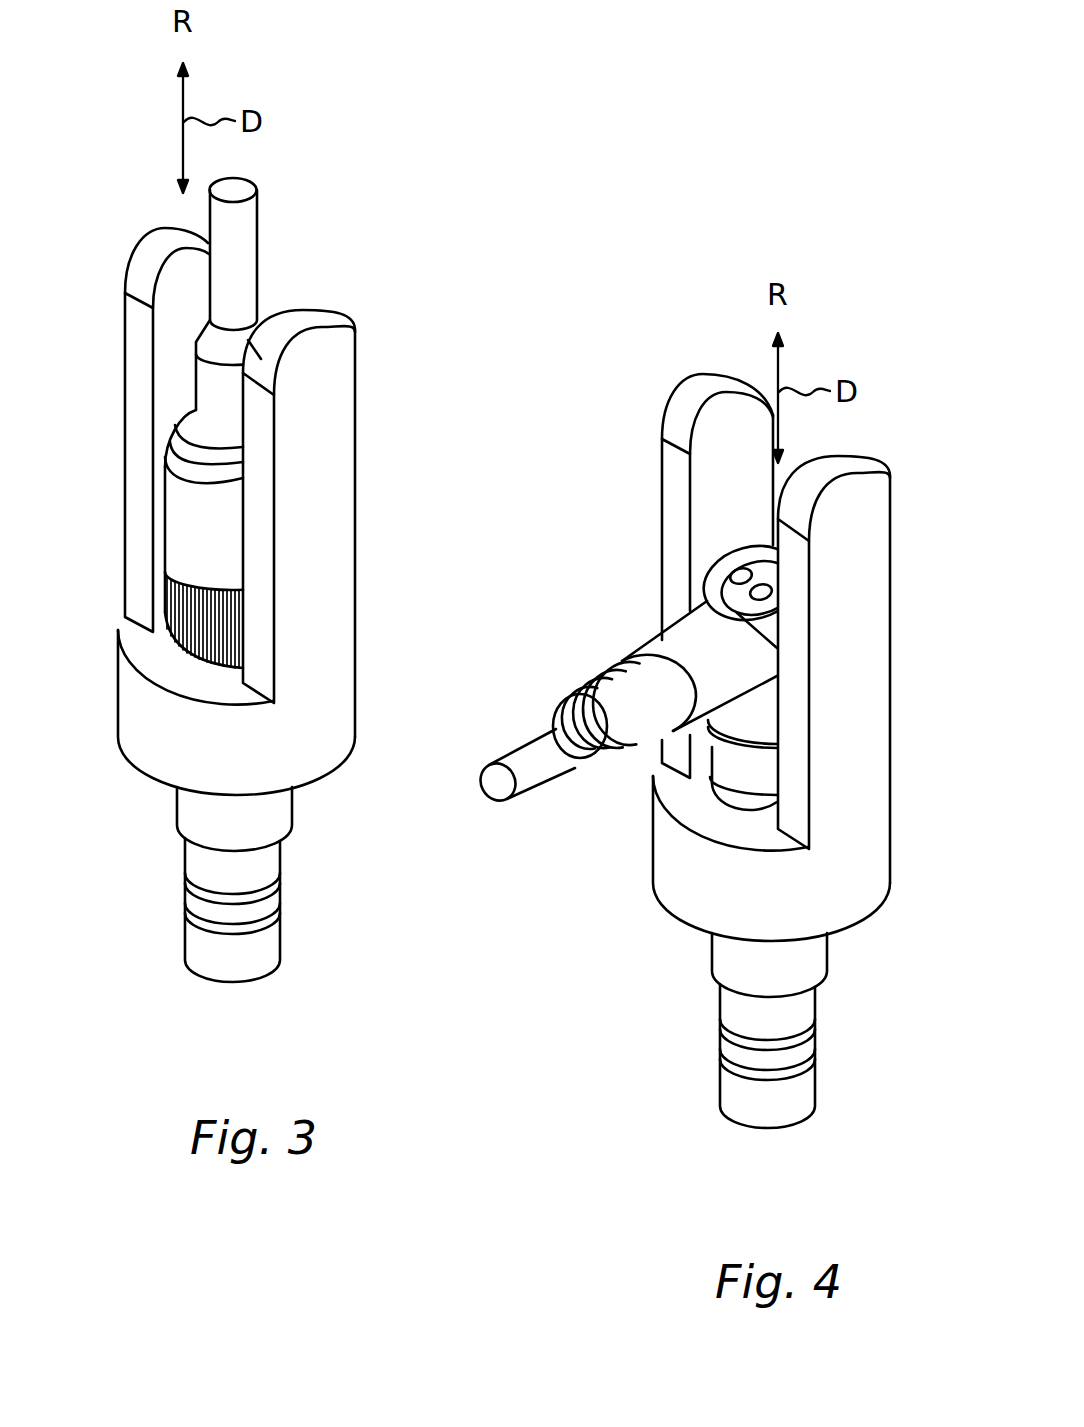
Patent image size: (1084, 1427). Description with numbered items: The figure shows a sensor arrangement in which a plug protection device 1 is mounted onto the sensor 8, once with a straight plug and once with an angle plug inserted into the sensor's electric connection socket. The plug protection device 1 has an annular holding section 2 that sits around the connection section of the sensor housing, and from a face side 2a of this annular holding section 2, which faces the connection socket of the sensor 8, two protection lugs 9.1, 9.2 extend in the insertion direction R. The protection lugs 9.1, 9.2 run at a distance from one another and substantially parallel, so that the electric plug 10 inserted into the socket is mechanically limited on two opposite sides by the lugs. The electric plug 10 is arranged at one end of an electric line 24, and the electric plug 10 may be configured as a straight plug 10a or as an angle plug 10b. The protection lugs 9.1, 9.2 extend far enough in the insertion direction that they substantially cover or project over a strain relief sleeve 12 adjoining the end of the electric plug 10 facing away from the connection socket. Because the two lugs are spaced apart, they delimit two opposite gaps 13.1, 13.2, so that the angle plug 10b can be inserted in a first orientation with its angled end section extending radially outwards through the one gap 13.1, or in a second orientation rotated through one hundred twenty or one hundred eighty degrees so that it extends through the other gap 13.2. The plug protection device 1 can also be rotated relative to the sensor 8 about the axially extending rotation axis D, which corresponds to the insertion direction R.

In FIG. 3, the plug protection device 1 is at (403, 215).
In FIG. 4, the plug protection device 1 is at (868, 374).
In FIG. 3, the annular holding section 2 is at (138, 715).
In FIG. 4, the annular holding section 2 is at (677, 875).
In FIG. 3, the face side 2a is at (149, 638).
In FIG. 4, the face side 2a is at (688, 823).
In FIG. 3, the sensor 8 is at (168, 913).
In FIG. 4, the sensor 8 is at (685, 1073).
In FIG. 3, the protection lug 9.1 is at (143, 430).
In FIG. 4, the protection lug 9.1 is at (660, 576).
In FIG. 3, the protection lug 9.2 is at (363, 500).
In FIG. 4, the protection lug 9.2 is at (869, 647).
In FIG. 3, the electric plug 10 is at (148, 539).
In FIG. 4, the electric plug 10 is at (674, 673).
In FIG. 3, the straight plug 10a is at (181, 527).
In FIG. 4, the angle plug 10b is at (700, 645).
In FIG. 3, the strain relief sleeve 12 is at (230, 387).
In FIG. 3, the gap 13.1 is at (187, 327).
In FIG. 4, the gap 13.1 is at (731, 450).
In FIG. 3, the gap 13.2 is at (342, 297).
In FIG. 4, the gap 13.2 is at (858, 445).
In FIG. 3, the electric line 24 is at (245, 248).
In FIG. 4, the electric line 24 is at (533, 762).